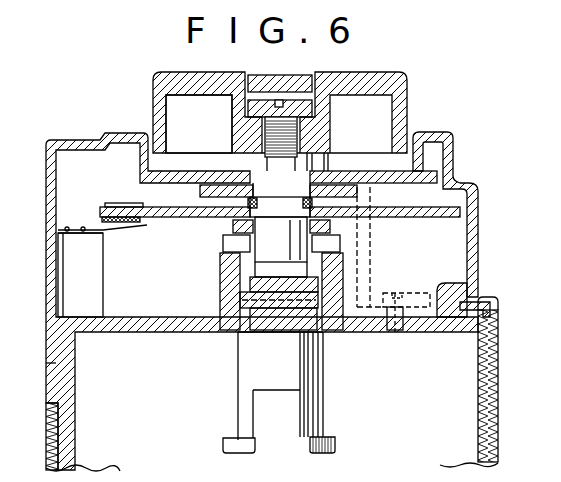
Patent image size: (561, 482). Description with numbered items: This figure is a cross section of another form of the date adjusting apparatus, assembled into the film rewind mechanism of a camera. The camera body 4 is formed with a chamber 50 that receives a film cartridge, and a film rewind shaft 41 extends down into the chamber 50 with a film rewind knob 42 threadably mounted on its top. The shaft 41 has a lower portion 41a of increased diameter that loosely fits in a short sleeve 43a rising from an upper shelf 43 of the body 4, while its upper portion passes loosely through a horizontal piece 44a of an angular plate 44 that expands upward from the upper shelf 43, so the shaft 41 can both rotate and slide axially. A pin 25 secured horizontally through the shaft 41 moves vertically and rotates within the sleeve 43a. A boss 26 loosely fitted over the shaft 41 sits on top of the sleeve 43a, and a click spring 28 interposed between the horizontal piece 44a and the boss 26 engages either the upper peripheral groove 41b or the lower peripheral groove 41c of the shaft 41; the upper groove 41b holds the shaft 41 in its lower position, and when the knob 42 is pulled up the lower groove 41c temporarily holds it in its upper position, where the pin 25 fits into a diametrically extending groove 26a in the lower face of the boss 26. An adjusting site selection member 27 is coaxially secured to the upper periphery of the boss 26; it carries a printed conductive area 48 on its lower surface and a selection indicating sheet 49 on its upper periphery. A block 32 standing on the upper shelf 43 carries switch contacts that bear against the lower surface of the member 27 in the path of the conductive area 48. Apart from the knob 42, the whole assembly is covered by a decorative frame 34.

The camera body 4 is at (68, 448).
The pin 25 is at (235, 322).
The boss 26 is at (230, 224).
The diametrically extending groove 26a is at (230, 247).
The adjusting site selection member 27 is at (420, 213).
The click spring 28 is at (240, 165).
The block 32 is at (92, 282).
The decorative frame 34 is at (463, 170).
The film rewind shaft 41 is at (233, 384).
The lower portion of increased diameter 41a is at (307, 368).
The upper peripheral groove 41b is at (330, 185).
The lower peripheral groove 41c is at (330, 253).
The film rewind knob 42 is at (387, 87).
The upper shelf 43 is at (117, 333).
The sleeve 43a is at (230, 283).
The angular plate 44 is at (365, 269).
The horizontal piece 44a is at (215, 188).
The conductive area 48 is at (107, 230).
The selection indicating sheet 49 is at (122, 203).
The chamber 50 is at (410, 422).